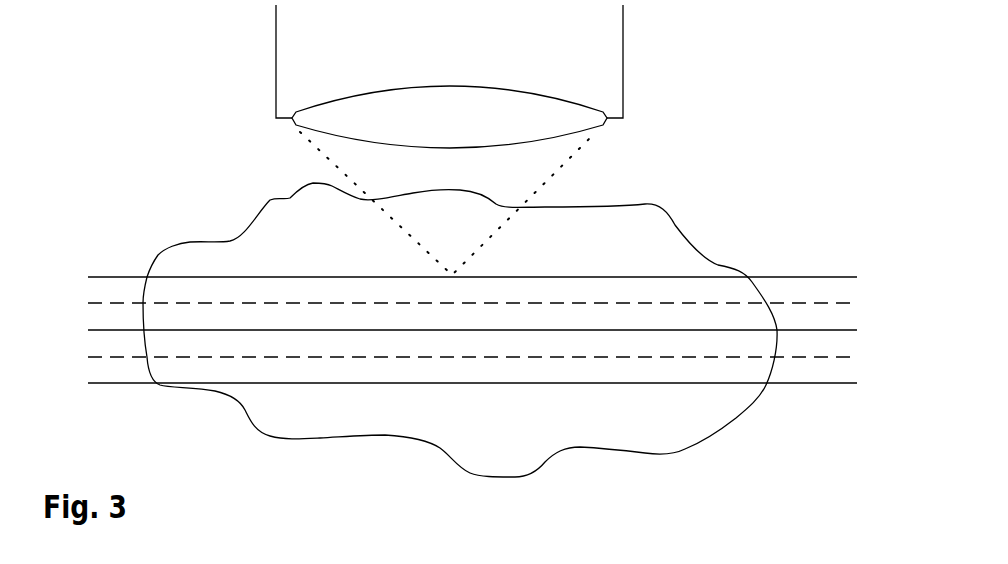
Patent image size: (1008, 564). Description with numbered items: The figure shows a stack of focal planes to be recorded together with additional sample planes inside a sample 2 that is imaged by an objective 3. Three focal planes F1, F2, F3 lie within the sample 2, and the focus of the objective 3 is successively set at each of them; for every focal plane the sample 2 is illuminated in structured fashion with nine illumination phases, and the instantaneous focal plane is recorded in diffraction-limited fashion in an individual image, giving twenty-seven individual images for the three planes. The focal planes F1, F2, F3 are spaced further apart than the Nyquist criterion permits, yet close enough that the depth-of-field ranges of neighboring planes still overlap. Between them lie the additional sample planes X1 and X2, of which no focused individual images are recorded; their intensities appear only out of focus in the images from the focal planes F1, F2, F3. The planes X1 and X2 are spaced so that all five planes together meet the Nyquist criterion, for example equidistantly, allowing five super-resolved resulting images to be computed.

The sample 2 is at (191, 242).
The objective 3 is at (547, 142).
The focal plane F1 is at (124, 277).
The focal plane F2 is at (832, 330).
The focal plane F3 is at (832, 383).
The additional sample plane X1 is at (826, 303).
The additional sample plane X2 is at (826, 357).